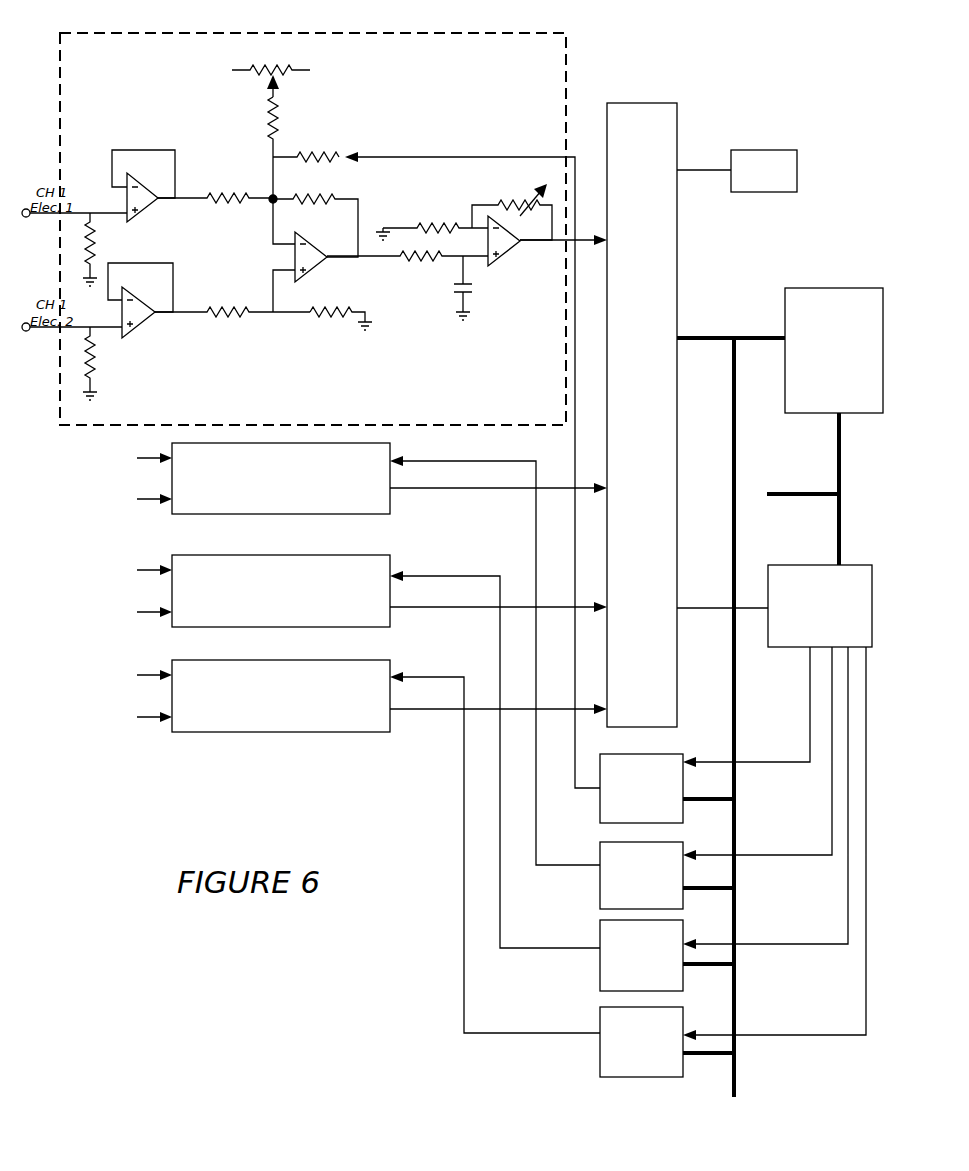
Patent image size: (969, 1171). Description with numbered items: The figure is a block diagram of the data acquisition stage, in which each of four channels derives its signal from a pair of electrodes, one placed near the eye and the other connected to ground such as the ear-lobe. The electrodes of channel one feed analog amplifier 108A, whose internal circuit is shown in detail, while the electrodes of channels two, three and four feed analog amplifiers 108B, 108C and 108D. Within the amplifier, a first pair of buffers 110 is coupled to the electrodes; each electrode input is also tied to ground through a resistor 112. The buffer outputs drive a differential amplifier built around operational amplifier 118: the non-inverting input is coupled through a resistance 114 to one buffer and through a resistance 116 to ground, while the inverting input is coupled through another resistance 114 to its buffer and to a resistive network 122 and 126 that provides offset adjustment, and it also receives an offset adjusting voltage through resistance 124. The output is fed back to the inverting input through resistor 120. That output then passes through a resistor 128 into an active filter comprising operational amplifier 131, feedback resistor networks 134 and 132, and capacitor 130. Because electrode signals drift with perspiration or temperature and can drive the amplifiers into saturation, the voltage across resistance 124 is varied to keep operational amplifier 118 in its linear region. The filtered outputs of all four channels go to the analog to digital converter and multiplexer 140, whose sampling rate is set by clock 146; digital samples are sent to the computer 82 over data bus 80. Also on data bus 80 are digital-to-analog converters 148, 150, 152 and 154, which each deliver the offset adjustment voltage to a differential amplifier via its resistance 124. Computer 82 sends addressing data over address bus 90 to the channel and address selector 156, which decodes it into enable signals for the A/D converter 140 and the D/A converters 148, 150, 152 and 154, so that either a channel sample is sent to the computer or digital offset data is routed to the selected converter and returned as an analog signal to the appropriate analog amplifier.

The analog amplifier 108A is at (313, 229).
The analog amplifier 108B is at (361, 654).
The analog amplifier 108C is at (359, 751).
The analog amplifier 108D is at (360, 843).
The buffer 110 is at (112, 180).
The 1M input resistor 112 is at (118, 230).
The resistance 114 is at (232, 213).
The resistance 116 is at (312, 324).
The operational amplifier 118 is at (323, 272).
The resistor 120 is at (305, 208).
The resistive network 122 is at (265, 118).
The resistance 124 is at (317, 155).
The resistive network 126 is at (263, 78).
The 100K resistor 128 is at (418, 270).
The capacitor 130 is at (474, 290).
The operational amplifier 131 is at (498, 262).
The feedback resistor network 132 is at (443, 216).
The feedback resistor network 134 is at (501, 205).
The analog to digital converter and multiplexer 140 is at (642, 415).
The clock 146 is at (760, 198).
The computer 82 is at (834, 350).
The data bus 80 is at (731, 705).
The address bus 90 is at (836, 472).
The channel and address selector 156 is at (784, 566).
The digital-to-analog converter 148 is at (610, 789).
The digital-to-analog converter 150 is at (600, 875).
The digital-to-analog converter 152 is at (599, 957).
The digital-to-analog converter 154 is at (592, 1043).